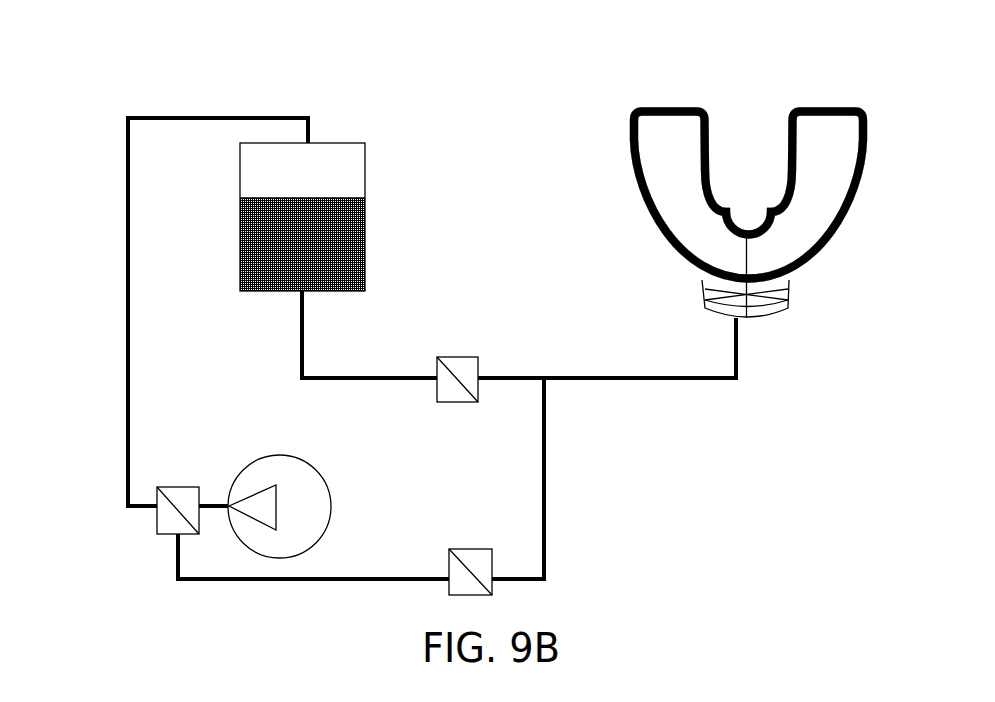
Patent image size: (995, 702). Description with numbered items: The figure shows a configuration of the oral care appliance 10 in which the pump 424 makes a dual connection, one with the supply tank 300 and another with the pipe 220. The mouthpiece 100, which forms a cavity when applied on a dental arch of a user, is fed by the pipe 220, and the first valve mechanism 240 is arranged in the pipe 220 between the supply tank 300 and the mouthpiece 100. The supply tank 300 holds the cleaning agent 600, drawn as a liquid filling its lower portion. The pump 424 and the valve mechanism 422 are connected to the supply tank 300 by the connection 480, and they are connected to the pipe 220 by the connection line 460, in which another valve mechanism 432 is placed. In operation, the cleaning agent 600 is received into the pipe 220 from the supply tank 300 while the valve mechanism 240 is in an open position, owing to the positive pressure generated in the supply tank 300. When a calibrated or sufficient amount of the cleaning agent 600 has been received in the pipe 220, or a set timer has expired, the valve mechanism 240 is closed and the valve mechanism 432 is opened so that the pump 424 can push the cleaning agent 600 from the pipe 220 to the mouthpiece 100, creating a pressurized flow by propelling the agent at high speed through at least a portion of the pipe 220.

The oral care appliance 10 is at (494, 80).
The mouthpiece 100 is at (640, 163).
The pipe 220 is at (608, 377).
The first valve mechanism 240 is at (465, 365).
The supply tank 300 is at (367, 188).
The cleaning agent 600 is at (345, 247).
The valve mechanism 422 is at (167, 522).
The pump 424 is at (313, 498).
The valve mechanism 432 is at (470, 558).
The connection line 460 is at (545, 503).
The connection 480 is at (128, 297).